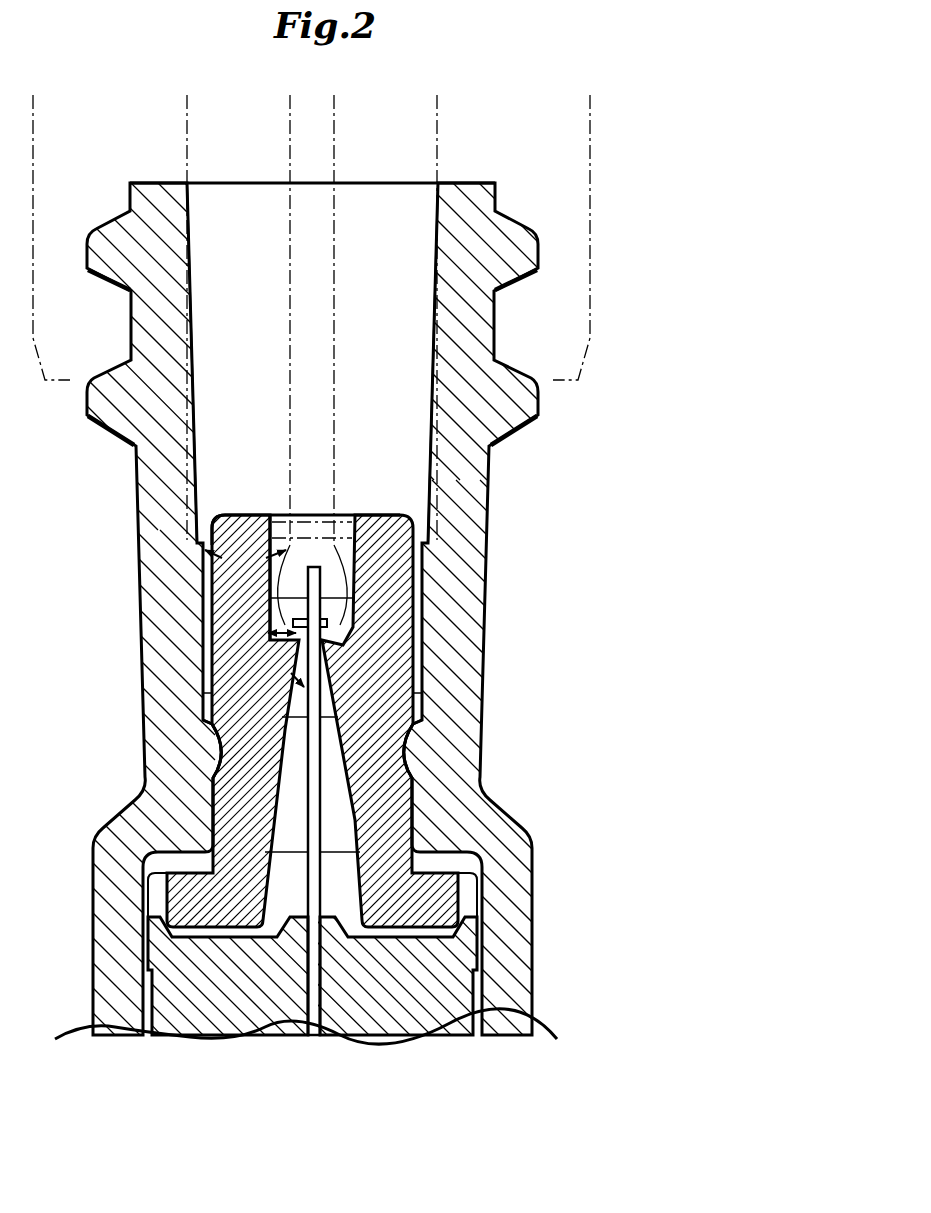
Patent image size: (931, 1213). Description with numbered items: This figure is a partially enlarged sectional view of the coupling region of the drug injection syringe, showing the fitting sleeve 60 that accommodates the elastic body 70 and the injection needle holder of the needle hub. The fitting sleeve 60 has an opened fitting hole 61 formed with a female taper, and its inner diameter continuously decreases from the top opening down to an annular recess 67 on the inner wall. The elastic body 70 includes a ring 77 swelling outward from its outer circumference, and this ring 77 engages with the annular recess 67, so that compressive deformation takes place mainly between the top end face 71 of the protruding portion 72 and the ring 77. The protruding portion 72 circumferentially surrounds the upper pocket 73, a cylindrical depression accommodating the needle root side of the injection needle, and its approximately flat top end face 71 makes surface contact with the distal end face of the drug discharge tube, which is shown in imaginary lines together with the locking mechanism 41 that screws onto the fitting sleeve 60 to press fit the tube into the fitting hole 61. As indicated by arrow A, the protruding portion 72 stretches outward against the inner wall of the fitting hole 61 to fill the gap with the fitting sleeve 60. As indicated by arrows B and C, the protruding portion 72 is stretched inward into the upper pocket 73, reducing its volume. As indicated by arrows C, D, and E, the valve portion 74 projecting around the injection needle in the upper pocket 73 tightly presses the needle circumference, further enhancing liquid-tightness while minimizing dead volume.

The locking mechanism 41 is at (548, 242).
The fitting sleeve 60 is at (492, 466).
The fitting hole 61 is at (218, 208).
The annular recess 67 is at (213, 781).
The elastic body 70 is at (417, 672).
The top end face 71 is at (360, 514).
The protruding portion 72 is at (214, 518).
The upper pocket 73 is at (291, 522).
The valve portion 74 is at (328, 621).
The ring 77 is at (215, 722).
The arrow A is at (223, 566).
The arrow B is at (267, 566).
The arrow C is at (252, 653).
The arrow D is at (322, 648).
The arrow E is at (286, 670).